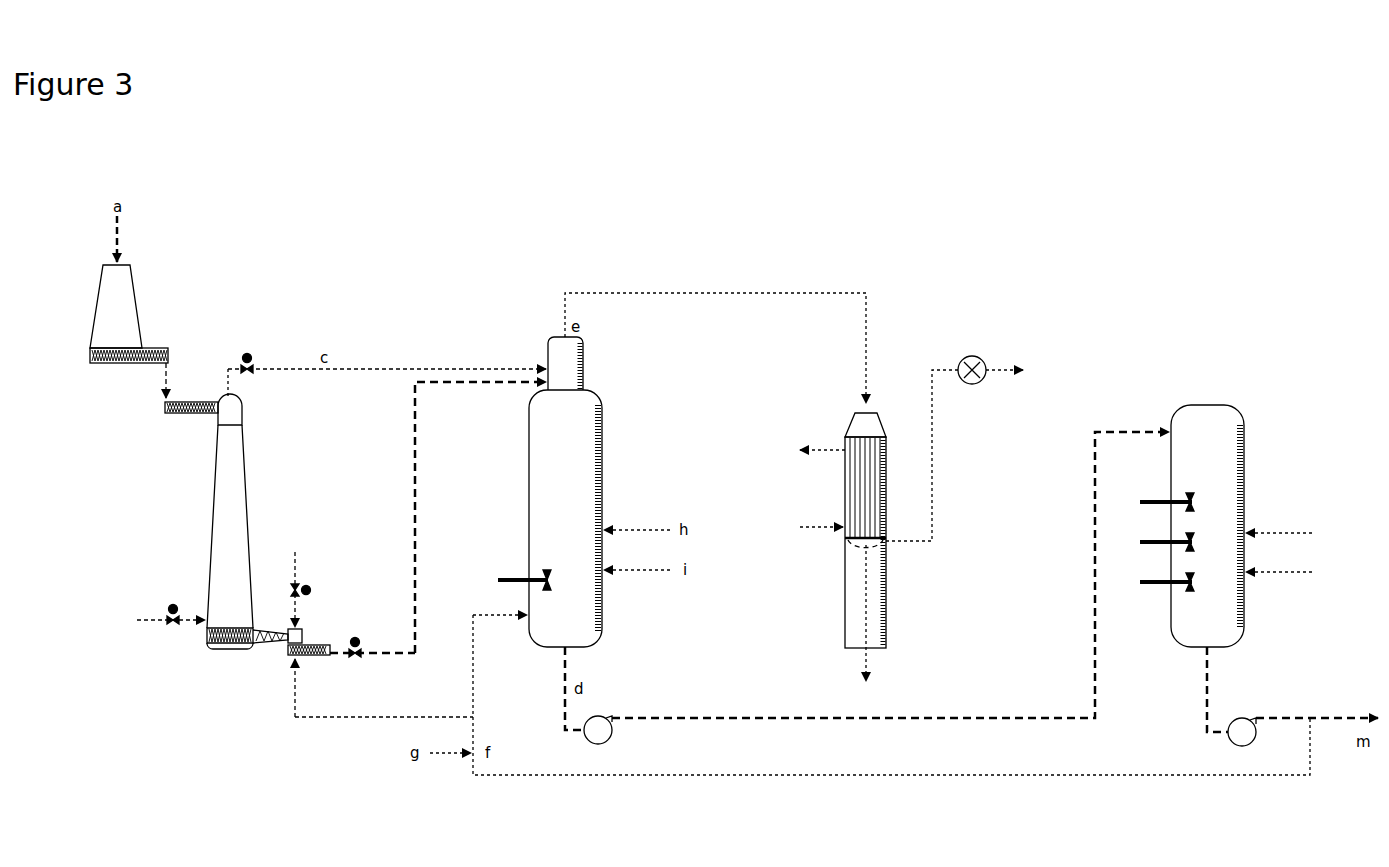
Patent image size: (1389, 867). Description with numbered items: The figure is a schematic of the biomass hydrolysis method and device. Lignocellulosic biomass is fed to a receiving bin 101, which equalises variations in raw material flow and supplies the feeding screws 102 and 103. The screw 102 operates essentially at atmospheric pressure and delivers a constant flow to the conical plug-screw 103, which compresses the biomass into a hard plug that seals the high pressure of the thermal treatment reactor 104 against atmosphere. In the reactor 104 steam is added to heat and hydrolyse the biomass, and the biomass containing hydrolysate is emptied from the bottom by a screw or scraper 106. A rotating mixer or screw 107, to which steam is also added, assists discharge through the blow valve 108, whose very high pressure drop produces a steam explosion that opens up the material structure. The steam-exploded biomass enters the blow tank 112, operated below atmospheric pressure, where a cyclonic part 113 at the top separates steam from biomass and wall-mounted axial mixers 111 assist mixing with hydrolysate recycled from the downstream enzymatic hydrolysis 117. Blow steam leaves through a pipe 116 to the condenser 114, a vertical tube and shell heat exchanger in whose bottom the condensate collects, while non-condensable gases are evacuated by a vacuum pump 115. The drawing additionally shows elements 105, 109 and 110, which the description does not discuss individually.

The receiving bin 101 is at (95, 290).
The feeding screw 102 is at (128, 365).
The plug-screw 103 is at (195, 415).
The thermal treatment reactor 104 is at (215, 468).
The inlet valve 105 is at (176, 605).
The screw and/or scraper 106 is at (203, 632).
The rotating mixer or screw 107 is at (308, 658).
The blow valve 108 is at (356, 637).
The gas inlet valve 109 is at (311, 587).
The top gas valve 110 is at (250, 354).
The wall mounted axial mixer 111 is at (498, 578).
The blow tank 112 is at (526, 547).
The cyclonic part 113 is at (549, 342).
The condenser 114 is at (845, 540).
The vacuum pump 115 is at (972, 356).
The pipe 116 is at (765, 295).
The enzymatic hydrolysis 117 is at (1178, 645).